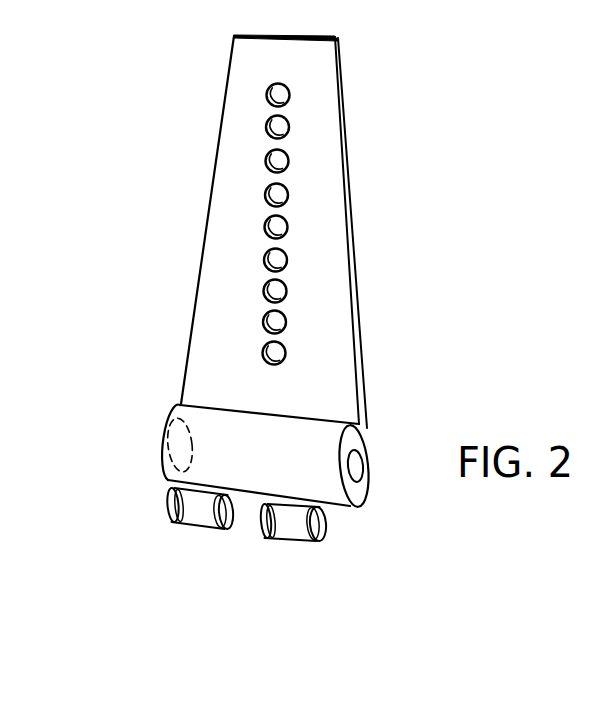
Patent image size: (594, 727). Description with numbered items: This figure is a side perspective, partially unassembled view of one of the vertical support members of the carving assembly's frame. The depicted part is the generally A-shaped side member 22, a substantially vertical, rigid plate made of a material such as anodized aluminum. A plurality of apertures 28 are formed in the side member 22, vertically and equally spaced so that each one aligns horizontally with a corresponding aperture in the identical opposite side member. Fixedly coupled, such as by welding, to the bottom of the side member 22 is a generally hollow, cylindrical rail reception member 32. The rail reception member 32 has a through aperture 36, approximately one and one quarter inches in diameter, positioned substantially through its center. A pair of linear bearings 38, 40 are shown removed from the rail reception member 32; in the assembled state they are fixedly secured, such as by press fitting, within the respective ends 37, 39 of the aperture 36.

The side member 22 is at (345, 138).
The apertures 28 is at (265, 131).
The rail reception member 32 is at (168, 412).
The through aperture 36 is at (355, 463).
The end of aperture 37 is at (165, 460).
The linear bearing 38 is at (168, 508).
The end of aperture 39 is at (364, 484).
The linear bearing 40 is at (282, 531).